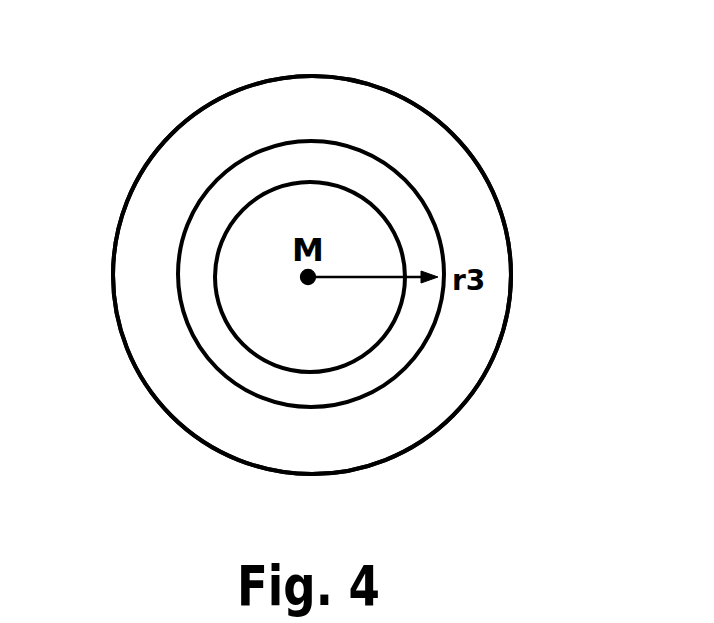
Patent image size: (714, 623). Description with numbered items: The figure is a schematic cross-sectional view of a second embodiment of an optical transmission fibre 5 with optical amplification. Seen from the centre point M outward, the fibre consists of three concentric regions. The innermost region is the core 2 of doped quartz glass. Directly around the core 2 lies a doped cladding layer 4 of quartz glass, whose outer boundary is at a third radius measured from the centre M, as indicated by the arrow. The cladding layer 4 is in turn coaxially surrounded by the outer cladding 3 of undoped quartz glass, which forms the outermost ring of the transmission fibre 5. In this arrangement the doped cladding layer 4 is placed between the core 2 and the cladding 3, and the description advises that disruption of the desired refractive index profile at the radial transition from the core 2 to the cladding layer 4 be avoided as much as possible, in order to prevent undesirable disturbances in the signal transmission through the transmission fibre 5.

The core 2 is at (257, 312).
The cladding 3 is at (312, 246).
The cladding layer 4 is at (392, 350).
The optical transmission fibre 5 is at (391, 275).